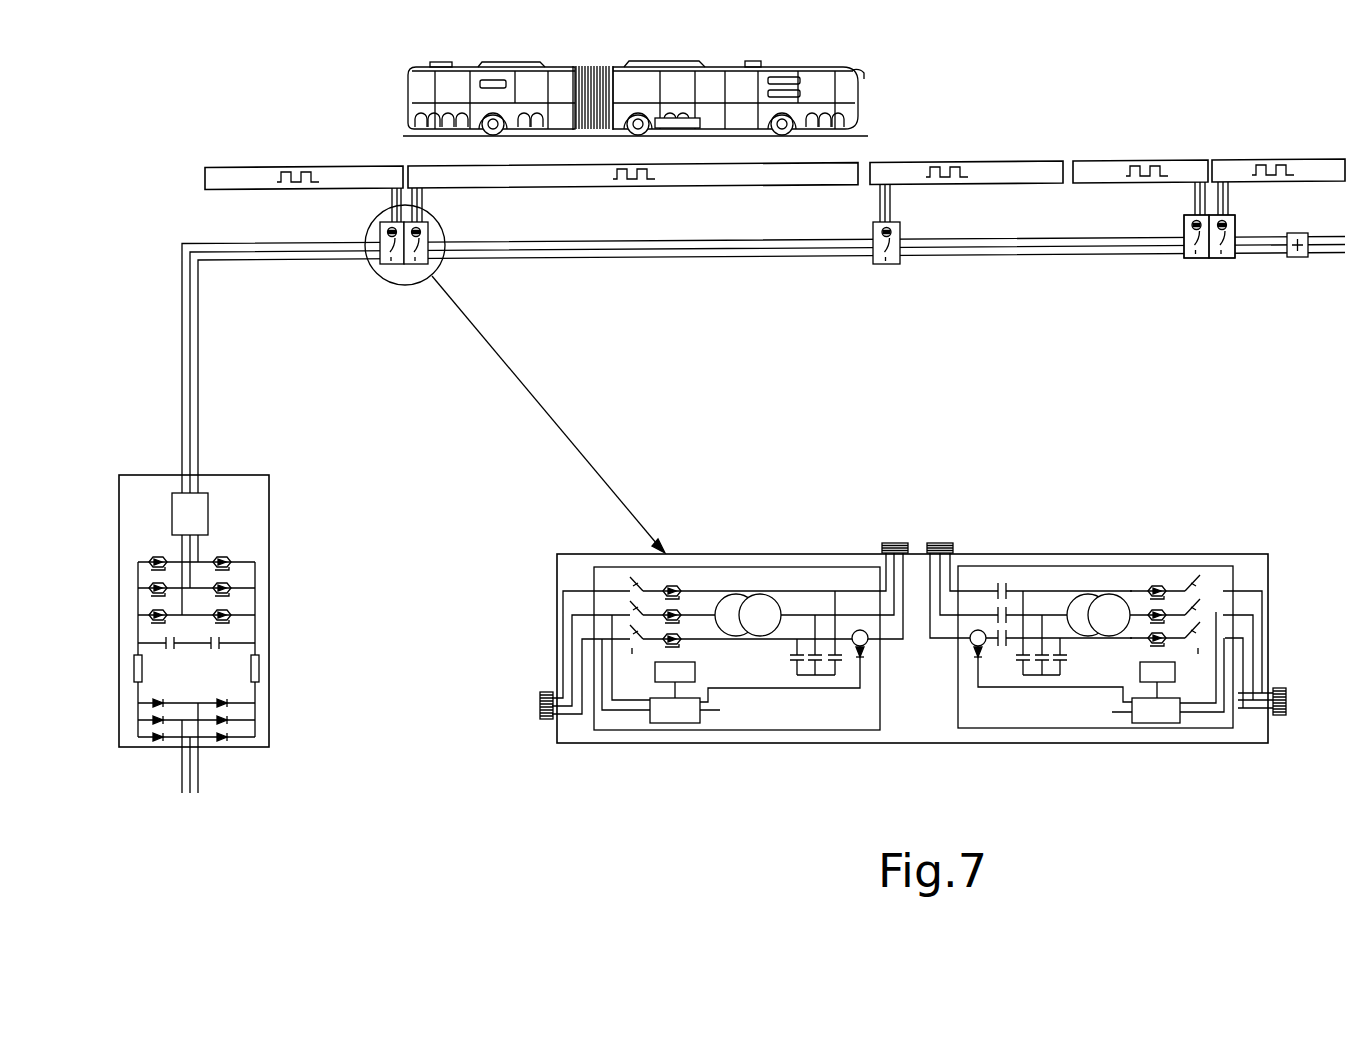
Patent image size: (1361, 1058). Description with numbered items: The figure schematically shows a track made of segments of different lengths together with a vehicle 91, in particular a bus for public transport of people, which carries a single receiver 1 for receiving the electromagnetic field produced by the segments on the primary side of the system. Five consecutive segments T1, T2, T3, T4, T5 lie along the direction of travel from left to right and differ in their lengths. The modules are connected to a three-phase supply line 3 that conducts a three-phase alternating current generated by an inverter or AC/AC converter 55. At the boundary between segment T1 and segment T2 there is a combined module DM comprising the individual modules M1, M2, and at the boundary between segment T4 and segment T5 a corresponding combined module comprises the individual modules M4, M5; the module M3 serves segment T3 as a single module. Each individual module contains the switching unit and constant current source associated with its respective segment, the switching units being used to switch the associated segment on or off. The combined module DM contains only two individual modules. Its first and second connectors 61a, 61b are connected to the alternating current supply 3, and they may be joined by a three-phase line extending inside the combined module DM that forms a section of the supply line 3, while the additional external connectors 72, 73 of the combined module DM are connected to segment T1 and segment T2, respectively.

The vehicle 91 is at (617, 66).
The receiver 1 is at (688, 130).
The segment T1 is at (258, 163).
The segment T2 is at (685, 187).
The segment T3 is at (988, 162).
The segment T4 is at (1153, 160).
The segment T5 is at (1270, 160).
The three-phase supply line 3 is at (200, 345).
The inverter or AC/AC converter 55 is at (273, 627).
The individual module M1 is at (740, 567).
The individual module M2 is at (1100, 567).
The module M3 is at (884, 266).
The individual module M4 is at (1188, 260).
The individual module M5 is at (1238, 226).
The combined module DM is at (1208, 260).
The external connector 72 is at (885, 543).
The external connector 73 is at (945, 543).
The first connector 61a is at (537, 705).
The second connector 61b is at (1290, 702).